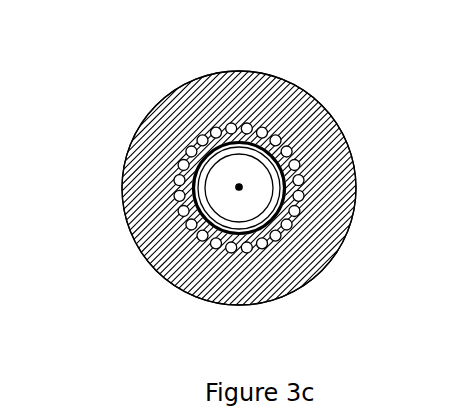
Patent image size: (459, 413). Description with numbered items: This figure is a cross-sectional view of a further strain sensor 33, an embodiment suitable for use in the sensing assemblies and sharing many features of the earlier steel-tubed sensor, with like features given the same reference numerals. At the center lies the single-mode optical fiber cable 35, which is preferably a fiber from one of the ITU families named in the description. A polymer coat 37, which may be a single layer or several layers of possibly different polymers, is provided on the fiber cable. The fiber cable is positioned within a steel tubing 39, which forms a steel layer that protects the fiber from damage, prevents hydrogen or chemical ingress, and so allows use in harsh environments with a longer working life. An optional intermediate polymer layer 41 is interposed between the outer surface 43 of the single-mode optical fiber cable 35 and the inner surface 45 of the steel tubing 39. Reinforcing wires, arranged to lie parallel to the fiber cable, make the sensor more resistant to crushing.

The strain sensor 33 is at (88, 186).
The single-mode optical fiber cable 35 is at (237, 160).
The polymer coat 37 is at (265, 272).
The steel tubing 39 is at (187, 223).
The intermediate polymer layer 41 is at (275, 173).
The outer surface 43 is at (280, 137).
The inner surface 45 is at (276, 196).